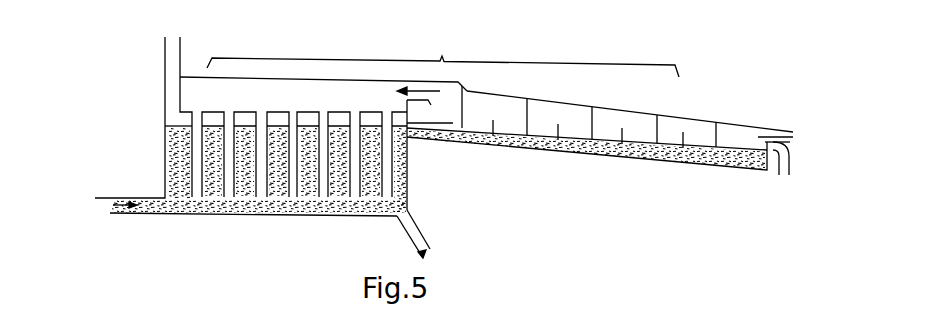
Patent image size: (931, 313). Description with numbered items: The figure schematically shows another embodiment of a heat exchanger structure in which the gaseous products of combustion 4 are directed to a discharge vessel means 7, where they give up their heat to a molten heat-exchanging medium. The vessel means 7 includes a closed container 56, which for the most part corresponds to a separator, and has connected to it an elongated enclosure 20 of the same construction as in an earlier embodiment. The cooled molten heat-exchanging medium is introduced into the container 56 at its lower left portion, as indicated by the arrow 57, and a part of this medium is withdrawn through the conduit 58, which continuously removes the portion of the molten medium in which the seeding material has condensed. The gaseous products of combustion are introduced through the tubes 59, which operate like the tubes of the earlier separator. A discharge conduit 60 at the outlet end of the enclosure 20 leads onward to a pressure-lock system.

The discharge vessel means 7 is at (454, 45).
The closed container 56 is at (255, 246).
The arrow 57 is at (106, 204).
The conduit 58 is at (415, 226).
The tubes 59 is at (380, 178).
The elongated enclosure 20 is at (570, 180).
The gaseous products of combustion 4 is at (812, 132).
The discharge conduit 60 is at (779, 173).